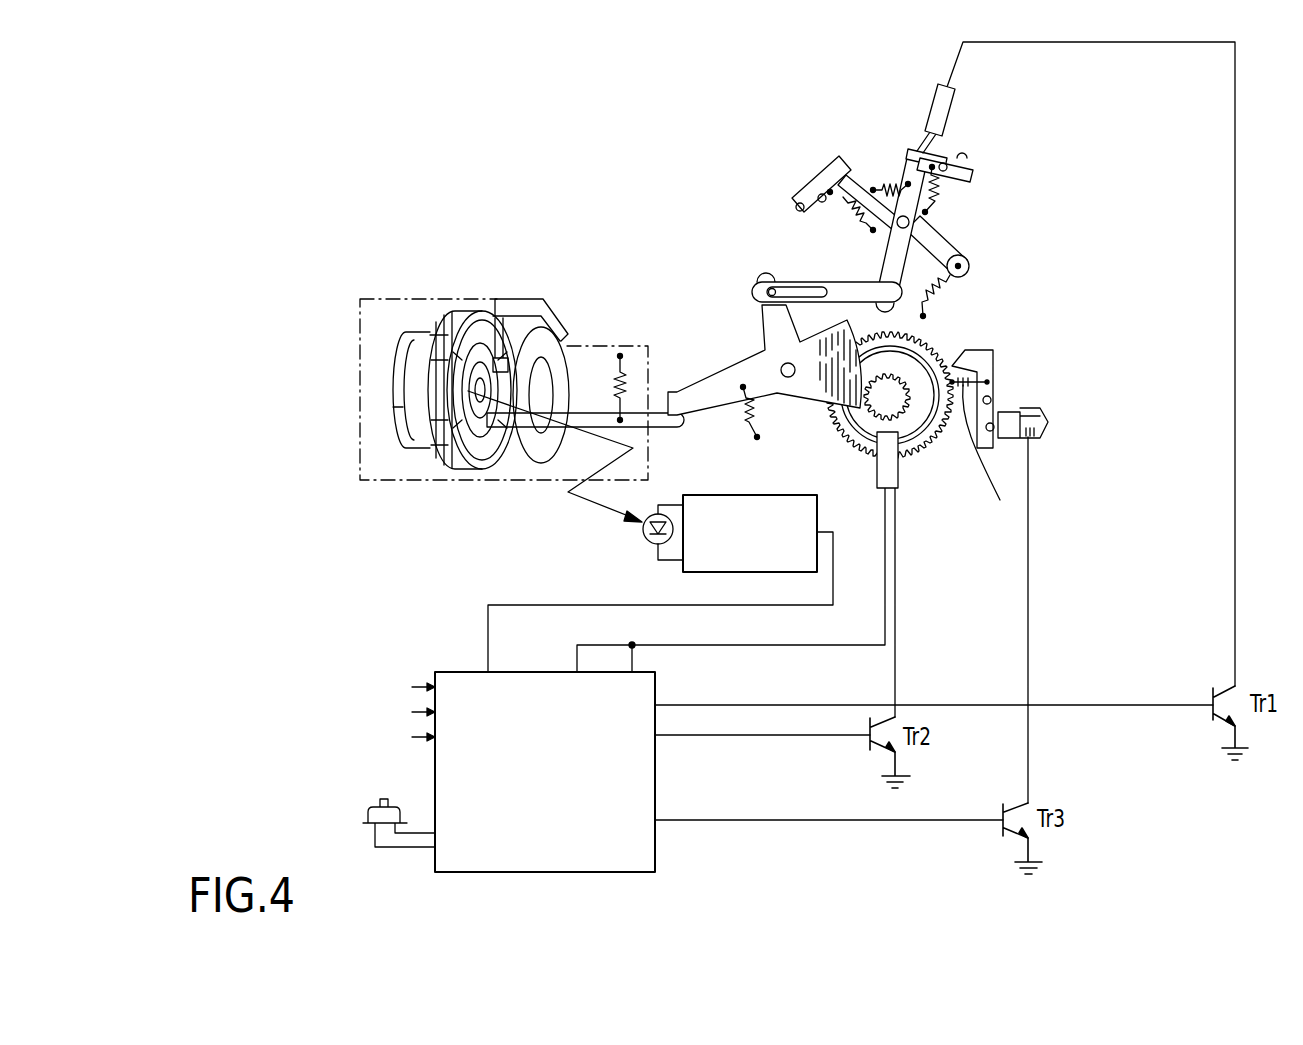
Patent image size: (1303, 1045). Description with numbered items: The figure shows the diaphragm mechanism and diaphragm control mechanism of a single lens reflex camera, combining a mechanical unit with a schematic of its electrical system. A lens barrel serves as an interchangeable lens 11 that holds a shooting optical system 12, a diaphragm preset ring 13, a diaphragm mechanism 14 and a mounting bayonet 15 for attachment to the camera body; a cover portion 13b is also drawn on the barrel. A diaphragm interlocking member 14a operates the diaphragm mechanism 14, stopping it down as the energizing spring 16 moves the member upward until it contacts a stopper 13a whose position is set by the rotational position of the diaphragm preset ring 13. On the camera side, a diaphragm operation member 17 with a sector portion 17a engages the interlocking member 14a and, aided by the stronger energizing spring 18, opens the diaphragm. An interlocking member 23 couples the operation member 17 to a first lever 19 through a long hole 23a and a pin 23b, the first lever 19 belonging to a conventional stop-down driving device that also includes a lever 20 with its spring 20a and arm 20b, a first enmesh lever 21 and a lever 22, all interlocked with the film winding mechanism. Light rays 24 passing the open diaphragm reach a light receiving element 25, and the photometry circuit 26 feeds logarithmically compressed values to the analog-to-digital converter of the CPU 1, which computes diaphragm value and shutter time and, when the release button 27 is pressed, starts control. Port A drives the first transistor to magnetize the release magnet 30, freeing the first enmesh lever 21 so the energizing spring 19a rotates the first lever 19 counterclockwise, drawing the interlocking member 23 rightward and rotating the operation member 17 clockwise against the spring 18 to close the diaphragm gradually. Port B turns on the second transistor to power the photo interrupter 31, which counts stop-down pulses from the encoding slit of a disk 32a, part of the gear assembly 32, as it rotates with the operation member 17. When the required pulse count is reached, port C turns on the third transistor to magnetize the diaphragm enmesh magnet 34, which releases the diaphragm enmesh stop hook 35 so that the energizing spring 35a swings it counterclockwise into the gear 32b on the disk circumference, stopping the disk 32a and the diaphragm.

The CPU 1 is at (526, 874).
The interchangeable lens 11 is at (434, 300).
The shooting optical system 12 is at (417, 433).
The diaphragm preset ring 13 is at (450, 450).
The stopper 13a is at (490, 317).
The cover 13b is at (566, 330).
The diaphragm mechanism 14 is at (484, 436).
The diaphragm interlocking member 14a is at (660, 430).
The mounting bayonet 15 is at (540, 446).
The energizing spring 16 is at (608, 383).
The diaphragm operation member 17 is at (805, 410).
The sector portion 17a is at (856, 328).
The energizing spring 18 is at (743, 422).
The first lever 19 is at (888, 262).
The energizing spring 19a is at (893, 185).
The stop-down driving device component 20 is at (950, 247).
The spring 20a is at (960, 292).
The lever arm 20b is at (858, 178).
The first enmesh lever 21 is at (950, 160).
The stop-down driving device component 22 is at (841, 175).
The interlocking member 23 is at (840, 285).
The long hole 23a is at (800, 292).
The pin 23b is at (888, 306).
The light rays 24 is at (598, 506).
The light receiving element 25 is at (648, 538).
The photometry circuit 26 is at (780, 496).
The release button 27 is at (366, 822).
The release magnet 30 is at (935, 96).
The photo interrupter 31 is at (898, 478).
The gear 32 is at (922, 345).
The disk 32a is at (941, 425).
The gear 32b is at (950, 342).
The diaphragm enmesh magnet 34 is at (1042, 415).
The diaphragm enmesh stop hook 35 is at (1000, 362).
The energizing spring 35a is at (984, 454).